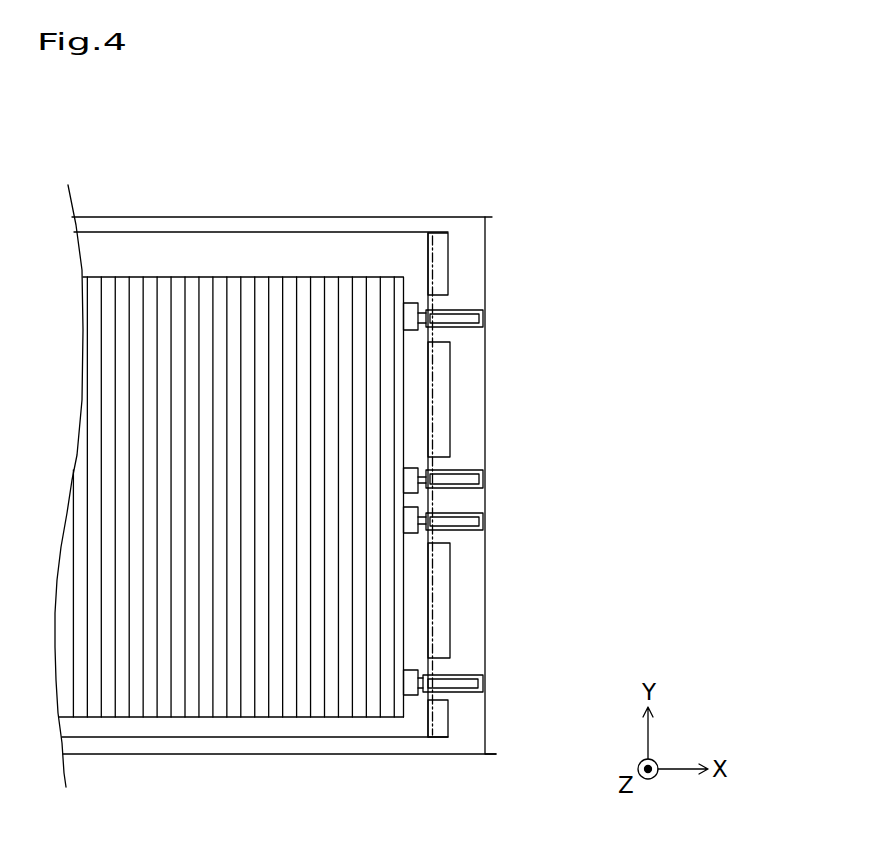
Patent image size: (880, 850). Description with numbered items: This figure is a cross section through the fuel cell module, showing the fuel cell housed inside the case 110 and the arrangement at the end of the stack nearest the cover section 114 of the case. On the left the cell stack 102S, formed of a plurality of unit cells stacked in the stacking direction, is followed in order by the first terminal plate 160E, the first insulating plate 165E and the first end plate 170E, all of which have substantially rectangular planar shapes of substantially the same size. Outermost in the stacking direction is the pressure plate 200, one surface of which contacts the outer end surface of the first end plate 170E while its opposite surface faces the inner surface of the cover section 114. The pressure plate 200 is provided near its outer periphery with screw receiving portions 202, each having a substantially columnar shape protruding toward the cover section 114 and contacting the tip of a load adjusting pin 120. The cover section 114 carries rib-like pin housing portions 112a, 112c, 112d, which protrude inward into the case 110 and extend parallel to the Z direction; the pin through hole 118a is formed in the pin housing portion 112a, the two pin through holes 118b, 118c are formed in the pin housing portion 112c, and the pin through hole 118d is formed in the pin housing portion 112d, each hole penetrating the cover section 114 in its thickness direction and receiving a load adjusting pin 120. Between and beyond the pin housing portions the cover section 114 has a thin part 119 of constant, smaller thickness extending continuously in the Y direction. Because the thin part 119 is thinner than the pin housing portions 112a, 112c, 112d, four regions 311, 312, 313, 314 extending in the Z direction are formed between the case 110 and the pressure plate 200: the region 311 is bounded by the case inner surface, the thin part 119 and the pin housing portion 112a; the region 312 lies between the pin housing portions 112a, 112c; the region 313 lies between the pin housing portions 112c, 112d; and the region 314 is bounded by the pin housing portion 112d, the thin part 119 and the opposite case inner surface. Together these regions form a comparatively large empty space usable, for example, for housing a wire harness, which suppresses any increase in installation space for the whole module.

The case 110 is at (127, 216).
The cell stack 102S is at (202, 722).
The first terminal plate 160E is at (338, 276).
The first insulating plate 165E is at (358, 276).
The first end plate 170E is at (372, 276).
The pressure plate 200 is at (398, 275).
The screw receiving portion 202 is at (453, 238).
The cover section 114 is at (465, 216).
The thin part 119 is at (464, 265).
The pin housing portion 112a is at (461, 665).
The pin housing portion 112c is at (458, 458).
The pin housing portion 112d is at (453, 300).
The pin through hole 118a is at (475, 693).
The pin through hole 118b is at (478, 531).
The pin through hole 118c is at (475, 472).
The pin through hole 118d is at (472, 309).
The load adjusting pin 120 is at (462, 330).
The region 311 is at (432, 743).
The region 312 is at (453, 615).
The region 313 is at (455, 392).
The region 314 is at (477, 211).